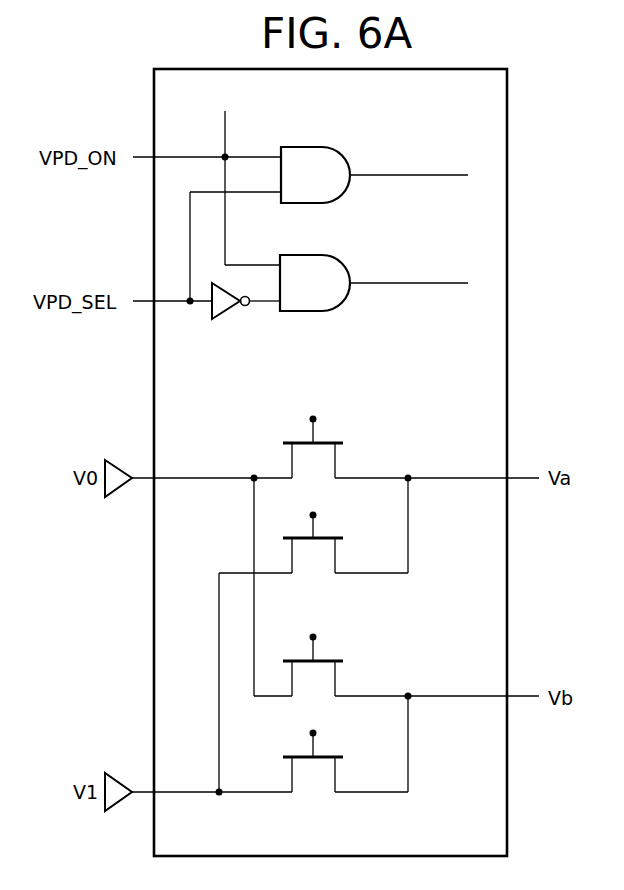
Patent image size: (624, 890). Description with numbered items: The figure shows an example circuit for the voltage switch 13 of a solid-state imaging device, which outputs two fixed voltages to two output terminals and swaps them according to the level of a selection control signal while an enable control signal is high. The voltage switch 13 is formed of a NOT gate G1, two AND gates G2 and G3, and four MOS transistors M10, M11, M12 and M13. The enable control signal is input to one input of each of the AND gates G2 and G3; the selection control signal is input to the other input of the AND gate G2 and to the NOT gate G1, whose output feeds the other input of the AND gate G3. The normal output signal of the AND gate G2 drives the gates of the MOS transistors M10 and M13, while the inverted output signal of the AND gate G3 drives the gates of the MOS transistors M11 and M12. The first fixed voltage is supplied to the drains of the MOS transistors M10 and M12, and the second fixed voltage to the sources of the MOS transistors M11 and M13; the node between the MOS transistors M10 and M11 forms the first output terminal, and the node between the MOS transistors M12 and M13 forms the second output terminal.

The voltage switch 13 is at (153, 98).
The NOT gate G1 is at (228, 318).
The AND gate G2 is at (303, 146).
The AND gate G3 is at (300, 312).
The MOS transistor M10 is at (330, 437).
The MOS transistor M11 is at (316, 570).
The MOS transistor M12 is at (330, 656).
The MOS transistor M13 is at (316, 790).